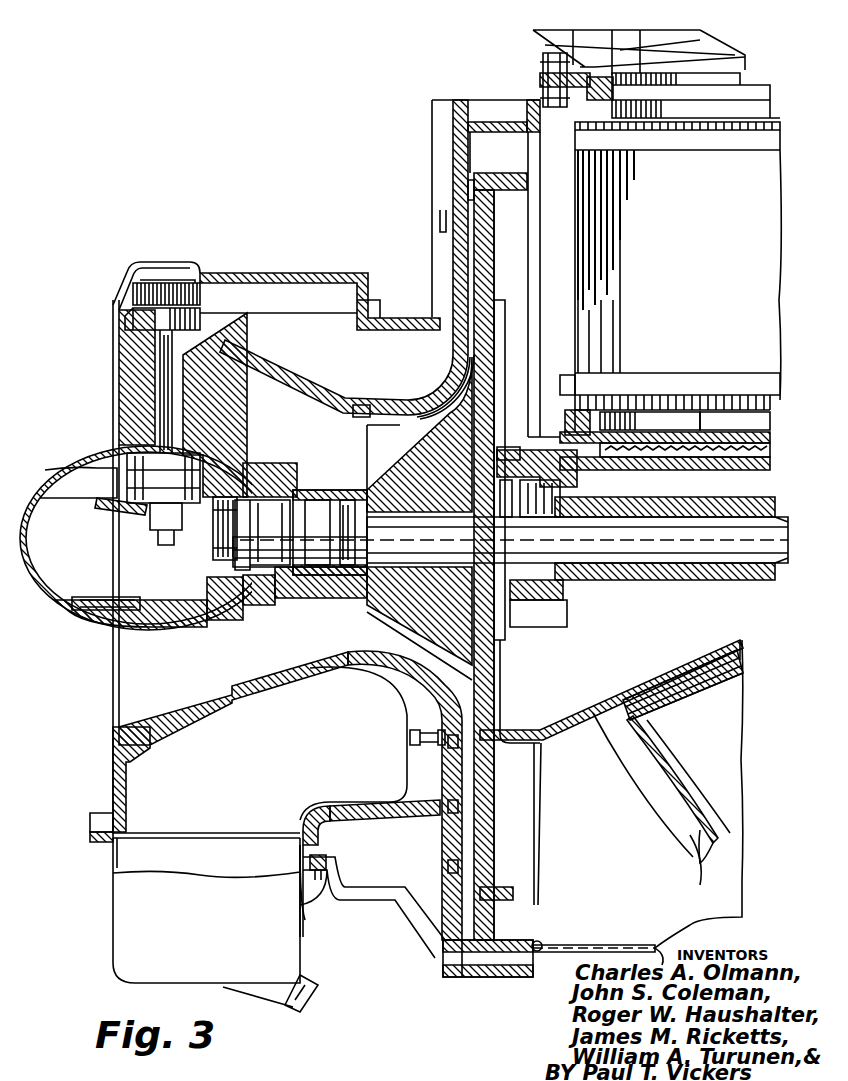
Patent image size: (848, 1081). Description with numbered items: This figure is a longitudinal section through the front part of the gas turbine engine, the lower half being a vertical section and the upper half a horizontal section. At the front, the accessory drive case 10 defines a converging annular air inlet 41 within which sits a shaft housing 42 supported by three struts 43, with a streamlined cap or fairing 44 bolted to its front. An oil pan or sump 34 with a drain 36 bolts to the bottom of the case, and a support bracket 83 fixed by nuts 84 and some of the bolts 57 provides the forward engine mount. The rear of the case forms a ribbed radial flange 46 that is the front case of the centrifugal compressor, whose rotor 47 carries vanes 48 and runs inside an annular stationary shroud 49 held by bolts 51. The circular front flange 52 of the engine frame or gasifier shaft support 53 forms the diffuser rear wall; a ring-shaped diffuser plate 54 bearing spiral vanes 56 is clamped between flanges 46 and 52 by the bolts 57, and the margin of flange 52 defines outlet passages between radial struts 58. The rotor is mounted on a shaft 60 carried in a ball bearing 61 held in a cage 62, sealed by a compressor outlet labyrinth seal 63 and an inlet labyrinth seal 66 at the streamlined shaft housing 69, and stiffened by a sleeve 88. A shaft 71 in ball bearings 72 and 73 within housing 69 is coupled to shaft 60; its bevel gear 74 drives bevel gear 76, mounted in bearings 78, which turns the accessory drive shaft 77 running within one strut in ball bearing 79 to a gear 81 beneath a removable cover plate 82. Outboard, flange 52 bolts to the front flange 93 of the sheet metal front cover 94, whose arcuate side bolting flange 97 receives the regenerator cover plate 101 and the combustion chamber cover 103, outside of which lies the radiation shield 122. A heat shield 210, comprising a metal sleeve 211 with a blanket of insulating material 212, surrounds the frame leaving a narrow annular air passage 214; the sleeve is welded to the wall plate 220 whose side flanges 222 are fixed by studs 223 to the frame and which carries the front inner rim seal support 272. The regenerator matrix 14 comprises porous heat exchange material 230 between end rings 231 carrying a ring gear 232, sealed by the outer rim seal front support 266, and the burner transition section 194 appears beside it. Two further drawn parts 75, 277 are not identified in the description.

The accessory drive case 10 is at (116, 748).
The regenerator matrix 14 is at (580, 195).
The oil pan or sump 34 is at (120, 975).
The drain 36 is at (297, 1010).
The converging annular air inlet 41 is at (315, 670).
The shaft housing 42 is at (188, 628).
The struts 43 is at (125, 388).
The streamlined cap or fairing 44 is at (42, 585).
The ribbed circular radial flange 46 is at (450, 215).
The compressor rotor 47 is at (420, 472).
The vanes 48 is at (373, 415).
The annular stationary shroud 49 is at (440, 405).
The bolts 51 is at (412, 738).
The circular front flange 52 is at (484, 322).
The engine frame or gasifier shaft support 53 is at (580, 725).
The ring-shaped diffuser plate 54 is at (476, 250).
The spiral vanes 56 is at (460, 186).
The bolts 57 is at (556, 946).
The radial struts 58 is at (488, 135).
The shaft 60 is at (405, 565).
The ball bearing 61 is at (560, 492).
The cage 62 is at (555, 605).
The compressor outlet labyrinth seal 63 is at (498, 450).
The inlet labyrinth seal 66 is at (360, 500).
The shaft housing 69 is at (288, 590).
The shaft 71 is at (250, 598).
The ball bearing 72 is at (213, 563).
The ball bearing 73 is at (272, 468).
The bevel gear 74 is at (224, 548).
The collar 75 is at (275, 500).
The bevel gear 76 is at (112, 512).
The accessory drive shaft 77 is at (180, 360).
The bearings 78 is at (135, 510).
The ball bearing 79 is at (135, 322).
The gear 81 is at (135, 285).
The removable cover plate 82 is at (290, 273).
The mounting or support bracket 83 is at (372, 900).
The nuts 84 is at (308, 868).
The sleeve 88 is at (680, 582).
The front flange 93 is at (540, 940).
The sheet metal front cover 94 is at (655, 948).
The side bolting flange 97 is at (540, 75).
The plate 101 is at (572, 30).
The combustion chamber cover 103 is at (725, 50).
The radiation shield 122 is at (535, 30).
The burner transition section 194 is at (738, 738).
The heat shield 210 is at (732, 690).
The metal sleeve 211 is at (745, 662).
The blanket of heat insulating material 212 is at (703, 680).
The narrow annular air passage 214 is at (680, 690).
The plate or wall 220 is at (698, 848).
The side flanges 222 is at (575, 385).
The studs 223 is at (580, 420).
The porous heat exchange material 230 is at (733, 152).
The end rings 231 is at (668, 390).
The ring gear 232 is at (724, 398).
The front support 266 is at (650, 30).
The front inner rim seal support 272 is at (600, 457).
The lead 277 is at (612, 30).